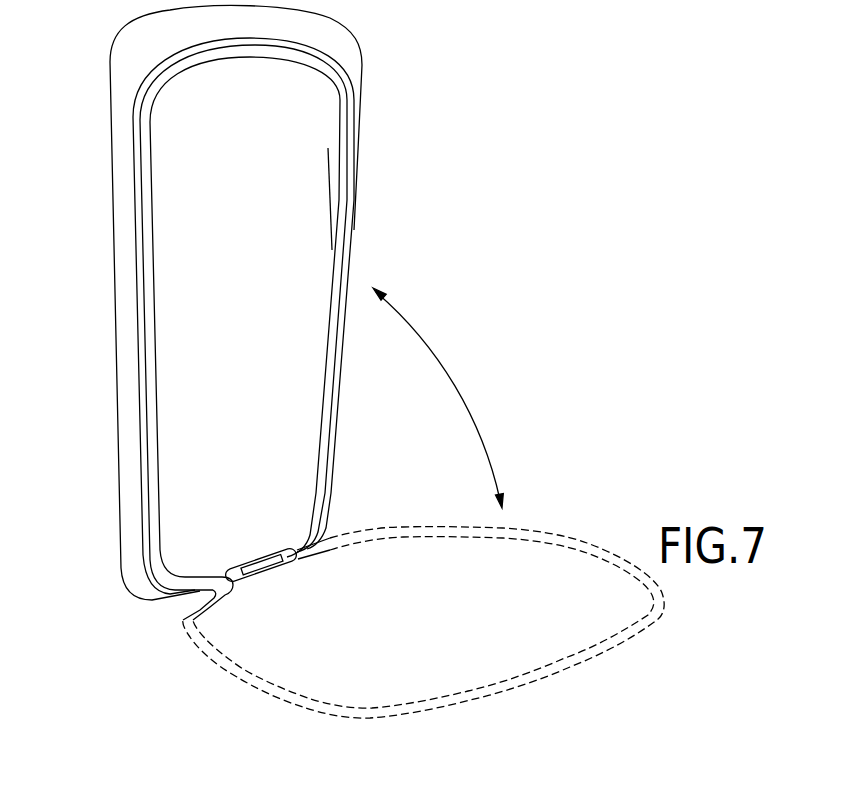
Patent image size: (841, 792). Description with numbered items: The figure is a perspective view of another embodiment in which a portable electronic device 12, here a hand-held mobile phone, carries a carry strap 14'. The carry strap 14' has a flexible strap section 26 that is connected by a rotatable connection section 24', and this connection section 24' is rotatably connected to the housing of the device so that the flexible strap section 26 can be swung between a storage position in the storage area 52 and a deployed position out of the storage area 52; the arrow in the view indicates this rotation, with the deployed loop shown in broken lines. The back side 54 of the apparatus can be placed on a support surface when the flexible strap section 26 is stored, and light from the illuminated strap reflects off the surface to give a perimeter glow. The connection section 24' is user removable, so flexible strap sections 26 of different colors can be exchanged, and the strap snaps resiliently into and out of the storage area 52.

The portable electronic device 12 is at (113, 222).
The storage area 52 is at (133, 183).
The carry strap 14' is at (201, 317).
The flexible strap section 26 is at (152, 335).
The rotatable connection section 24' is at (281, 580).
The back side 54 is at (328, 148).